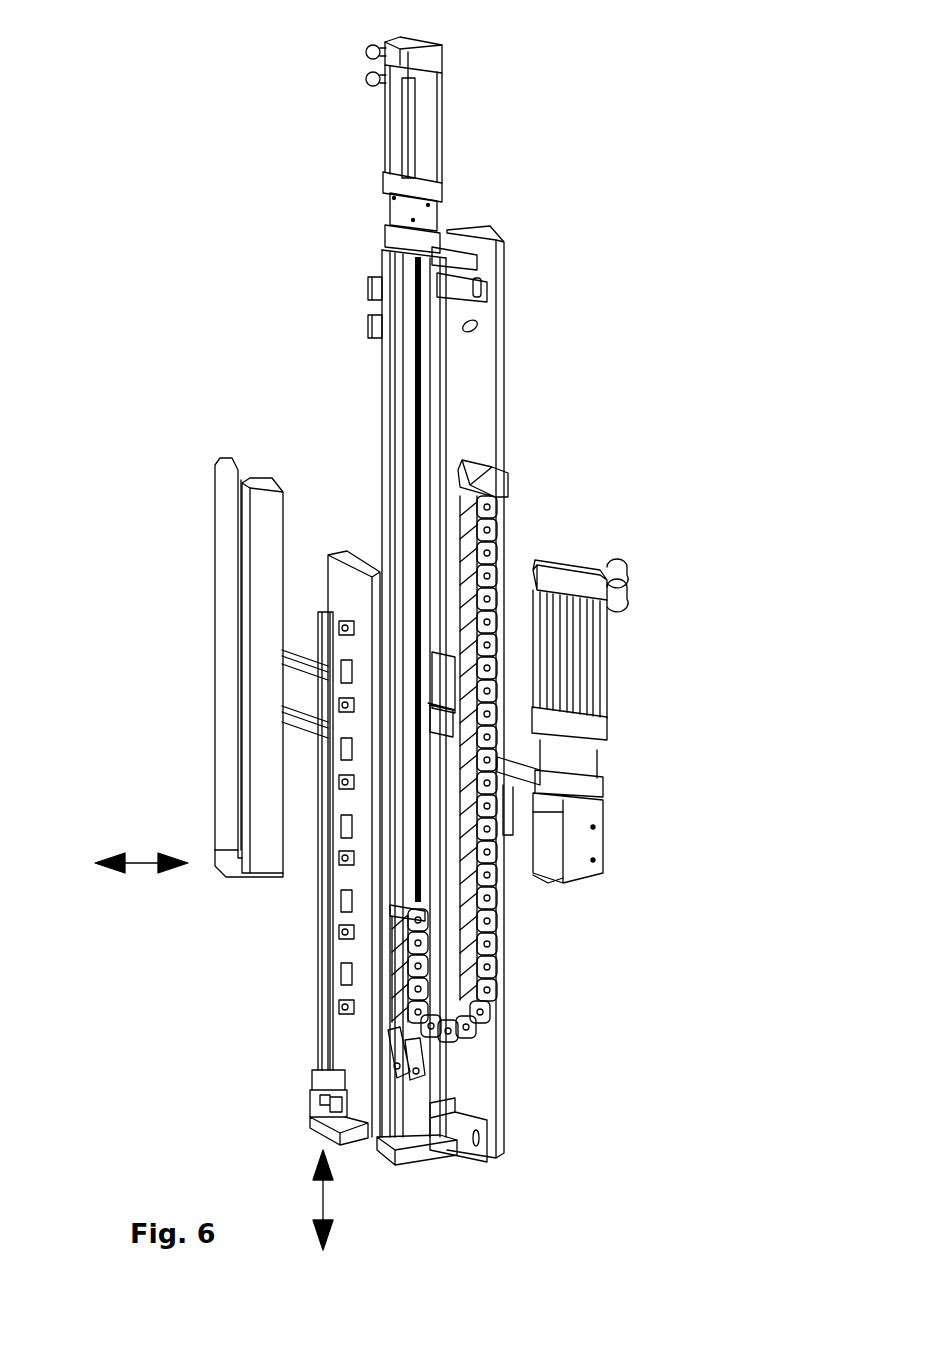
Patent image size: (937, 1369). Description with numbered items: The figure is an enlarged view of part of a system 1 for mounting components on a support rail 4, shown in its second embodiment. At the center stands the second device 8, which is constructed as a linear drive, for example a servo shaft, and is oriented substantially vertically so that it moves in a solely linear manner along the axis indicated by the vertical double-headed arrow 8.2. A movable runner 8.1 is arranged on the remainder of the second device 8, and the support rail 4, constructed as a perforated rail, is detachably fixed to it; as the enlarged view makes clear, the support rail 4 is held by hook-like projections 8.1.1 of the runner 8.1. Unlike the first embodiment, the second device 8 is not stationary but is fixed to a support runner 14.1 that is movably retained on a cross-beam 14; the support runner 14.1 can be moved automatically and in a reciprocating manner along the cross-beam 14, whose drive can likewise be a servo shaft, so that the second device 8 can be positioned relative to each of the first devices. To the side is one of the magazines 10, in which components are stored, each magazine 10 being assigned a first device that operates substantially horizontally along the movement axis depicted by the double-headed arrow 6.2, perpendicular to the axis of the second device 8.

The system 1 is at (130, 40).
The second device 8 is at (390, 425).
The support runner 14.1 is at (483, 390).
The cross-beam 14 is at (585, 853).
The magazine 10 is at (225, 647).
The double-headed arrow 6.2 is at (138, 862).
The support rail 4 is at (325, 916).
The runner 8.1 is at (352, 1049).
The hook-like projections 8.1.1 is at (337, 1006).
The double-headed arrow 8.2 is at (323, 1188).